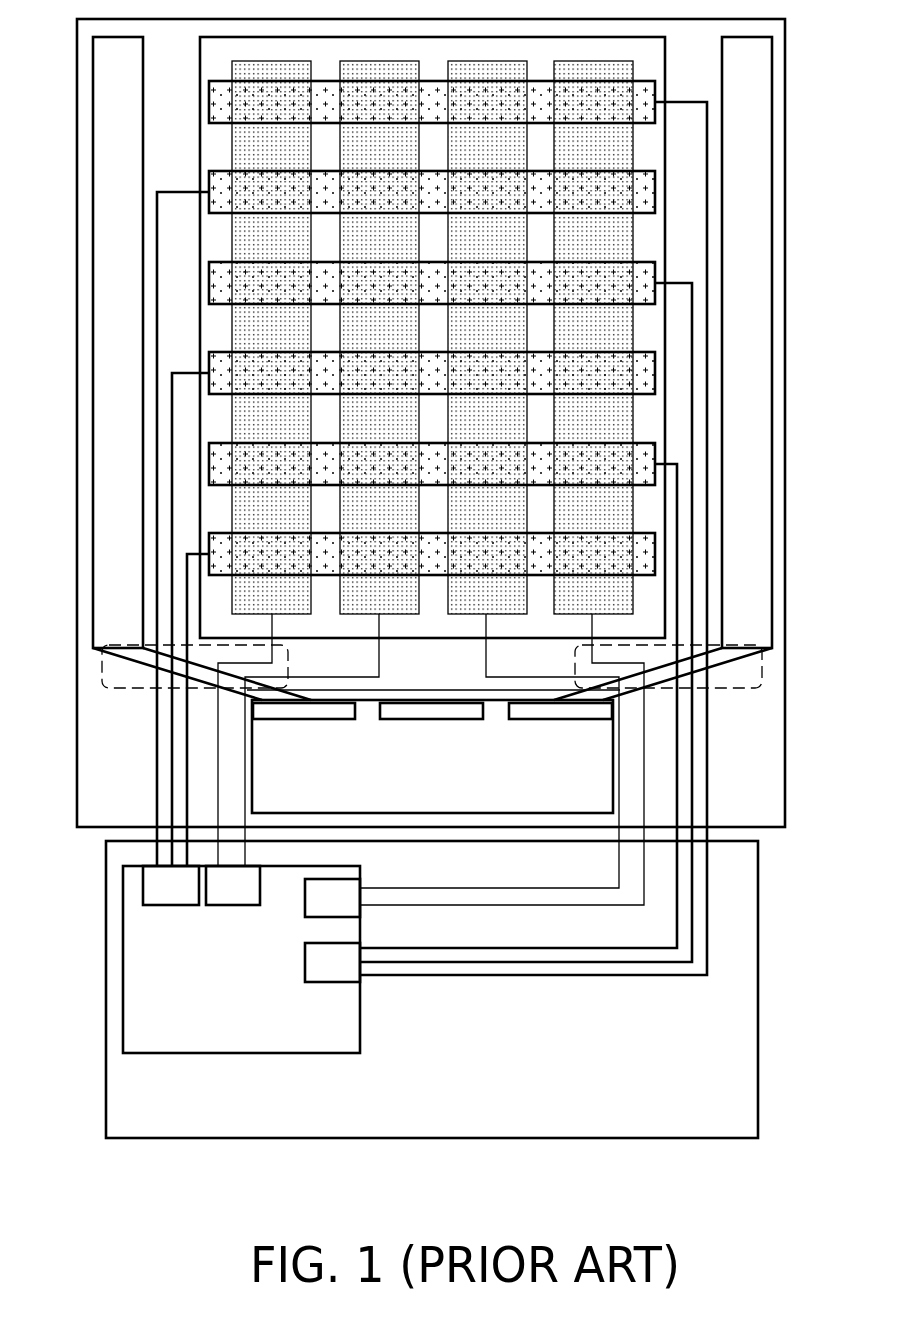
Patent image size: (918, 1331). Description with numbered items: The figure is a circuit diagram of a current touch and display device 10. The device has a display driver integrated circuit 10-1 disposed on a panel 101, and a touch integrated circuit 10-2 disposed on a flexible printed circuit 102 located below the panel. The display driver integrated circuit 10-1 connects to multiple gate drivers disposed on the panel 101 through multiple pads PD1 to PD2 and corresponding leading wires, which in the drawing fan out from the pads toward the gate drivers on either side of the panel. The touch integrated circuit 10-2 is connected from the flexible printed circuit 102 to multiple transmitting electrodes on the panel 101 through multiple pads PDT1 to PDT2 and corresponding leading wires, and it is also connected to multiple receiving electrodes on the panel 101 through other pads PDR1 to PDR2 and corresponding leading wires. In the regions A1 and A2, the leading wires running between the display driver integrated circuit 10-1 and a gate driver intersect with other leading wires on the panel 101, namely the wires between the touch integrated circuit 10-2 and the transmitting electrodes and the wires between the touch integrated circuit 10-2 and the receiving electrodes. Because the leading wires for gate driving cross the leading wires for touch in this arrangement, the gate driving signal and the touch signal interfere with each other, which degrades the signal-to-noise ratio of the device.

The touch and display device 10 is at (434, 602).
The panel 101 is at (785, 788).
The flexible printed circuit 102 is at (758, 988).
The display driver integrated circuit 10-1 is at (613, 740).
The touch integrated circuit 10-2 is at (123, 962).
The region A1 is at (102, 675).
The region A2 is at (763, 674).
The pad PD1 is at (293, 713).
The pad PD2 is at (567, 713).
The pad PDR1 is at (165, 905).
The pad PDT1 is at (228, 905).
The pad PDT2 is at (337, 879).
The pad PDR2 is at (305, 970).